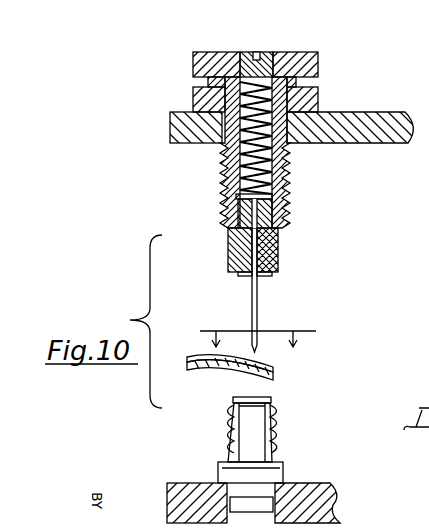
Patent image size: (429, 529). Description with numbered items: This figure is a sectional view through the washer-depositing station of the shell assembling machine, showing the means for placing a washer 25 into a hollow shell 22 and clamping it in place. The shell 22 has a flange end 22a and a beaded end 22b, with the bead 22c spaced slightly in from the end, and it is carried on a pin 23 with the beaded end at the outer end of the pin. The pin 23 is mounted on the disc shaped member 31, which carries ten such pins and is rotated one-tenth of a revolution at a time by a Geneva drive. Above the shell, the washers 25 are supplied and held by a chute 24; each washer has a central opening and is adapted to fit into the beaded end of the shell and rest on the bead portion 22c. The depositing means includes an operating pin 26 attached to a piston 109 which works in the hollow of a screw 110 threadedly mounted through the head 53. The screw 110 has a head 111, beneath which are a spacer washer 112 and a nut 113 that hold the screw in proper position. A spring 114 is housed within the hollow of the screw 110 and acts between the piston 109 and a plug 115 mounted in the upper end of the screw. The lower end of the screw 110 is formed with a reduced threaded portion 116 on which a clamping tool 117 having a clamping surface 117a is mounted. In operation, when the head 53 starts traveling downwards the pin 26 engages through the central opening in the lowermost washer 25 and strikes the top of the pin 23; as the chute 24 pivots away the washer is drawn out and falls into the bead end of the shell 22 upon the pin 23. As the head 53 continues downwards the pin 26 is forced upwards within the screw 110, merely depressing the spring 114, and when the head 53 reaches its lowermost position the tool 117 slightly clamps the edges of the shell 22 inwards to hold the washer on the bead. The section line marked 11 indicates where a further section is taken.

The plug 115 is at (265, 58).
The head 111 is at (313, 62).
The spacer washer 112 is at (302, 82).
The nut 113 is at (315, 101).
The head 53 is at (361, 123).
The spring 114 is at (236, 172).
The screw 110 is at (282, 178).
The piston 109 is at (283, 208).
The reduced threaded portion 116 is at (278, 231).
The clamping tool 117 is at (277, 253).
The clamping surface 117a is at (266, 273).
The operating pin 26 is at (251, 296).
The section line 11 is at (258, 328).
The washer 25 is at (210, 363).
The chute 24 is at (218, 375).
The beaded end 22b is at (272, 400).
The bead 22c is at (232, 406).
The hollow shell 22 is at (279, 416).
The flange end 22a is at (279, 453).
The pin 23 is at (267, 477).
The disc shaped member 31 is at (333, 495).